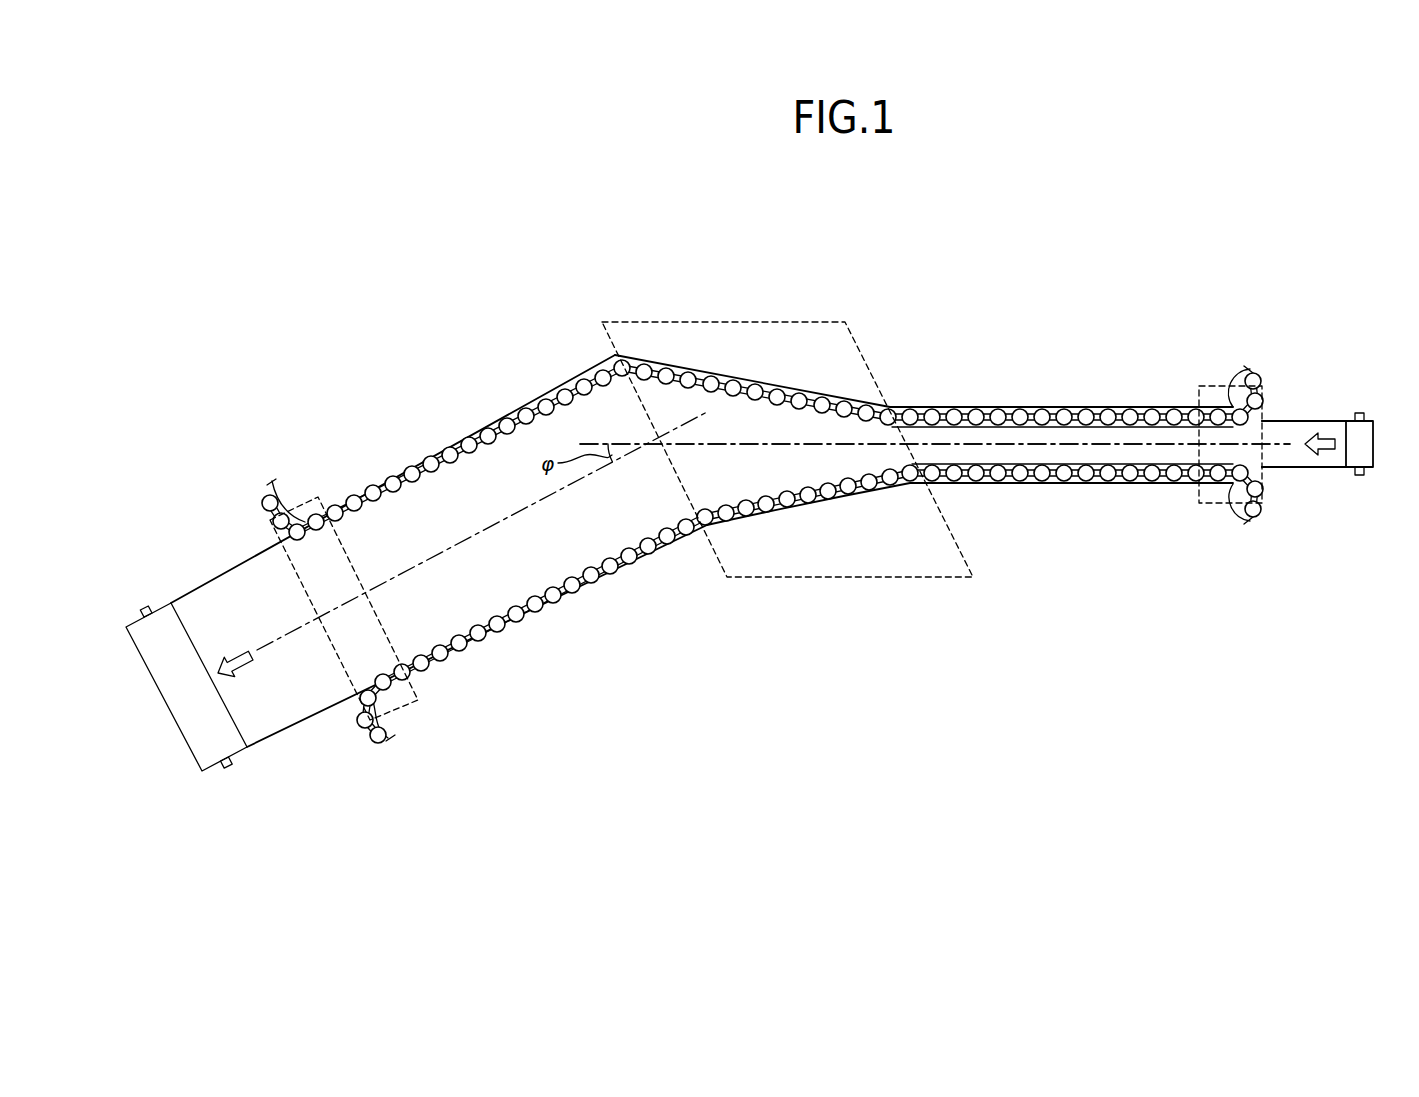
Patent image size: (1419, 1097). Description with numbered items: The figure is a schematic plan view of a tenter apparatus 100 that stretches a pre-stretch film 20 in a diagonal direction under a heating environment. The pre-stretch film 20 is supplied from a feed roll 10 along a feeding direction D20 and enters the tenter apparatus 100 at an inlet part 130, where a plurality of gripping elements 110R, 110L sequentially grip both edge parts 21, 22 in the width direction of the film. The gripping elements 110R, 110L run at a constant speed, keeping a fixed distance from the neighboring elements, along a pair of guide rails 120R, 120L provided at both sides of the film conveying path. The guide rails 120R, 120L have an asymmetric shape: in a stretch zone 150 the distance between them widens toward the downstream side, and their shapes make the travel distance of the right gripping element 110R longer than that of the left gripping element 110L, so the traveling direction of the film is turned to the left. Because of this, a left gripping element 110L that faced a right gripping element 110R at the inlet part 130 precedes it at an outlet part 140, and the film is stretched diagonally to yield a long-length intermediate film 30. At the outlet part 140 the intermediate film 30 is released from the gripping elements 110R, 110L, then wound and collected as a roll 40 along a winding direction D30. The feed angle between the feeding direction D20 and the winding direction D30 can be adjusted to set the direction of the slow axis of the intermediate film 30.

The feed roll 10 is at (1373, 445).
The pre-stretch film 20 is at (1328, 468).
The edge part 21 is at (1290, 420).
The edge part 22 is at (1288, 468).
The intermediate film 30 is at (288, 718).
The roll 40 is at (210, 772).
The tenter apparatus 100 is at (1172, 305).
The gripping element 110R is at (1108, 406).
The gripping element 110L is at (1112, 485).
The guide rail 120R is at (1022, 406).
The guide rail 120L is at (1018, 485).
The inlet part 130 is at (1218, 505).
The outlet part 140 is at (405, 706).
The stretch zone 150 is at (865, 578).
The feeding direction D20 is at (918, 440).
The winding direction D30 is at (497, 522).